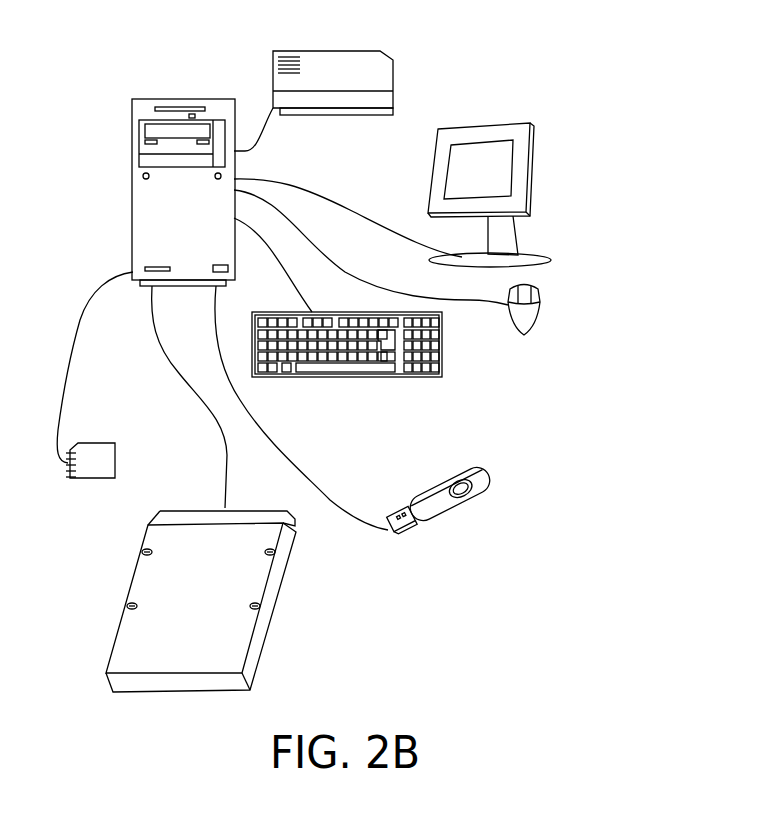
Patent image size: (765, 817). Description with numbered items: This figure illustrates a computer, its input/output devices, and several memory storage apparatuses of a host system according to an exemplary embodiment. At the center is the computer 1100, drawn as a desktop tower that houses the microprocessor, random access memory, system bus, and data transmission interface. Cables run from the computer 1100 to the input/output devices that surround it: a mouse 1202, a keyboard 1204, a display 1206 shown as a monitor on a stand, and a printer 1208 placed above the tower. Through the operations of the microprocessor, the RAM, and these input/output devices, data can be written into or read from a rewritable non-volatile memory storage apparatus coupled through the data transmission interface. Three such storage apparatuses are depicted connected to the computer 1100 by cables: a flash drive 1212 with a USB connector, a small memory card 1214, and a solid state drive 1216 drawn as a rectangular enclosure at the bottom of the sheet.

The computer 1100 is at (183, 98).
The mouse 1202 is at (544, 315).
The keyboard 1204 is at (445, 356).
The display 1206 is at (492, 123).
The printer 1208 is at (330, 50).
The flash drive 1212 is at (440, 497).
The memory card 1214 is at (117, 452).
The solid state drive (SSD) 1216 is at (248, 499).